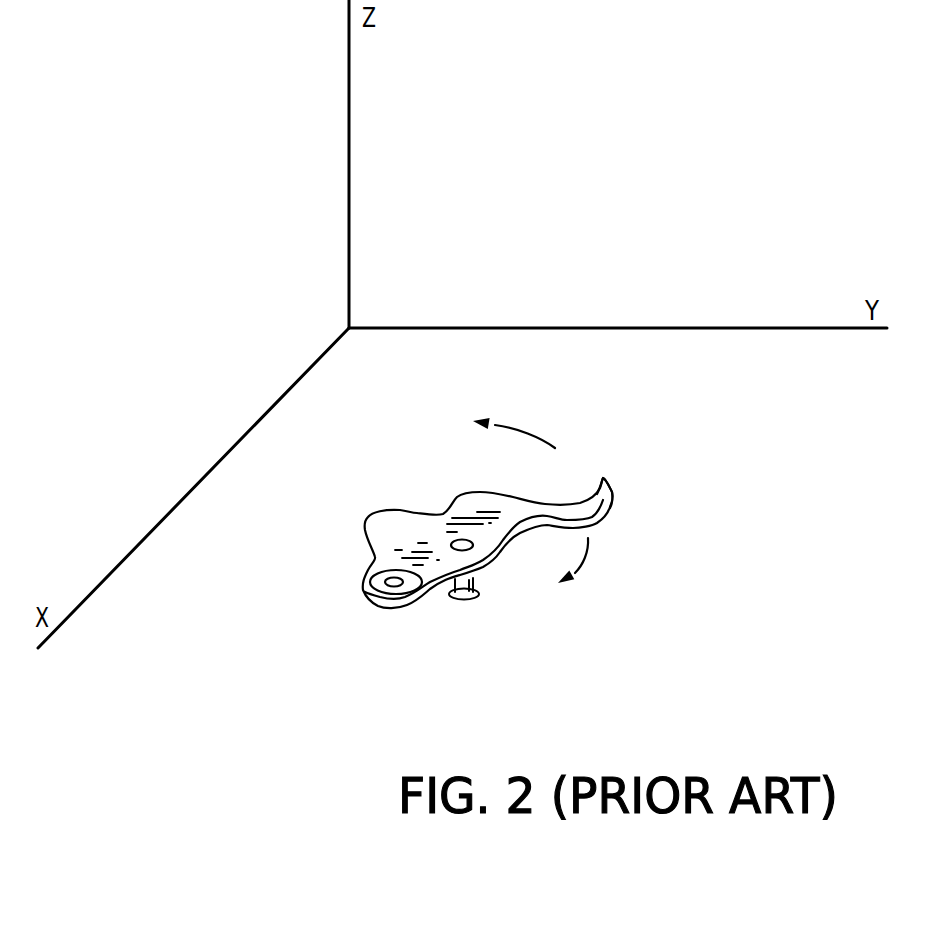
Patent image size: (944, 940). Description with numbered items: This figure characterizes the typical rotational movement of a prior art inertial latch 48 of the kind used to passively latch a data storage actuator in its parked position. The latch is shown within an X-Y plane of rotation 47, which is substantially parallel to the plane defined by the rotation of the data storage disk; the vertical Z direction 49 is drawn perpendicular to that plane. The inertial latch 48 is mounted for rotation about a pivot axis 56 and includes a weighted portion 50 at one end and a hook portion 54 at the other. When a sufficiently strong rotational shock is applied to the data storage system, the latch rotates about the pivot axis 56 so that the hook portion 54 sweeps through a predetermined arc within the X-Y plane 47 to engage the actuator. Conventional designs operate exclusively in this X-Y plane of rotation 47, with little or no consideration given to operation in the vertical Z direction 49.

The plane of rotation 47 is at (733, 402).
The inertial latch 48 is at (417, 512).
The vertical Z direction 49 is at (420, 128).
The weighted portion 50 is at (365, 590).
The hook portion 54 is at (610, 500).
The pivot axis 56 is at (451, 545).